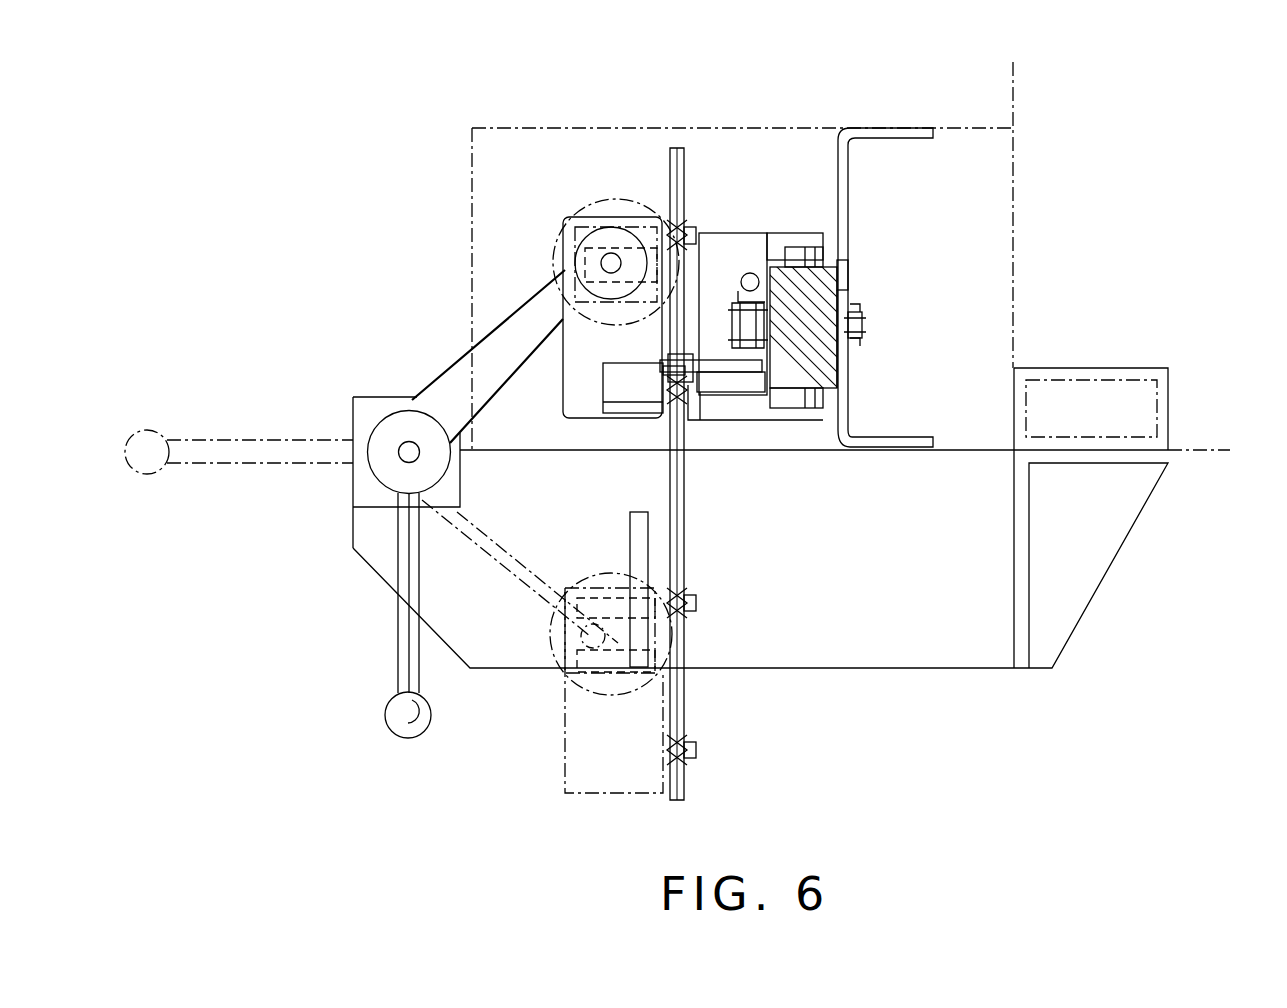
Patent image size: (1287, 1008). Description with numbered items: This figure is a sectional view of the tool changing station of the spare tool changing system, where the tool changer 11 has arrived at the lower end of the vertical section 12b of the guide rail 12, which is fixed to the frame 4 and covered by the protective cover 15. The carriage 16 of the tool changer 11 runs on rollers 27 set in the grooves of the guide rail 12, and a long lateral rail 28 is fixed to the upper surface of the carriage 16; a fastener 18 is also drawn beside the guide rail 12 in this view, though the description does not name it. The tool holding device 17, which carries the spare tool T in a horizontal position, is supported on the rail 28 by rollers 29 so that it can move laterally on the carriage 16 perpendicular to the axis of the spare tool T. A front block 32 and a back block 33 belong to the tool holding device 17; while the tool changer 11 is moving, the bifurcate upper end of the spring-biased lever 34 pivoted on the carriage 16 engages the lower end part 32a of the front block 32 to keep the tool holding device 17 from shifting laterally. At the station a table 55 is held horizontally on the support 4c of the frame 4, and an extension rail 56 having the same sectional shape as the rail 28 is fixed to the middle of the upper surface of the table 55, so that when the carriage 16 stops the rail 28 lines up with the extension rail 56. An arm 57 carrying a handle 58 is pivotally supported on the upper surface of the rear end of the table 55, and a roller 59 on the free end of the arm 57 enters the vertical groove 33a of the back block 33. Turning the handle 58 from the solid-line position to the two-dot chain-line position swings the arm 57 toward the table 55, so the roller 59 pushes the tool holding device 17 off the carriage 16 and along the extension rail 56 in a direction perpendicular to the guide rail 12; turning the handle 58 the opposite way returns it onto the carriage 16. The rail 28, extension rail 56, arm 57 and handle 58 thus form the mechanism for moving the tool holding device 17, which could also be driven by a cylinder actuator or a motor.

The frame 4 is at (1213, 458).
The support 4c is at (1082, 368).
The tool changer 11 is at (745, 165).
The guide rail 12 is at (838, 280).
The vertical section 12b is at (830, 372).
The protective cover 15 is at (470, 178).
The carriage 16 is at (745, 245).
The tool holding device 17 is at (568, 402).
The nut 18 is at (861, 330).
The rollers 27 is at (807, 250).
The rail 28 is at (680, 145).
The rollers 29 is at (680, 237).
The front block 32 is at (618, 413).
The lower end part 32a is at (665, 368).
The back block 33 is at (570, 243).
The vertical groove 33a is at (633, 257).
The lever 34 is at (707, 367).
The table 55 is at (865, 660).
The extension rail 56 is at (683, 537).
The arm 57 is at (454, 392).
The handle 58 is at (403, 637).
The roller 59 is at (590, 257).
The spare tool T is at (593, 205).